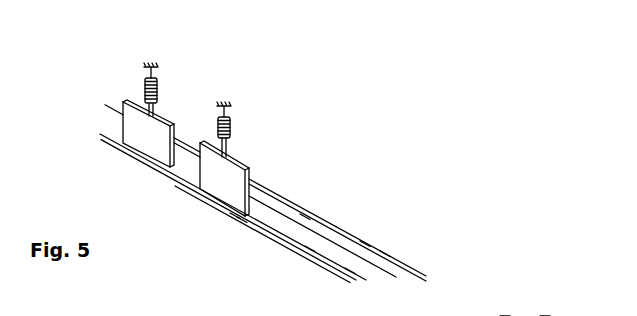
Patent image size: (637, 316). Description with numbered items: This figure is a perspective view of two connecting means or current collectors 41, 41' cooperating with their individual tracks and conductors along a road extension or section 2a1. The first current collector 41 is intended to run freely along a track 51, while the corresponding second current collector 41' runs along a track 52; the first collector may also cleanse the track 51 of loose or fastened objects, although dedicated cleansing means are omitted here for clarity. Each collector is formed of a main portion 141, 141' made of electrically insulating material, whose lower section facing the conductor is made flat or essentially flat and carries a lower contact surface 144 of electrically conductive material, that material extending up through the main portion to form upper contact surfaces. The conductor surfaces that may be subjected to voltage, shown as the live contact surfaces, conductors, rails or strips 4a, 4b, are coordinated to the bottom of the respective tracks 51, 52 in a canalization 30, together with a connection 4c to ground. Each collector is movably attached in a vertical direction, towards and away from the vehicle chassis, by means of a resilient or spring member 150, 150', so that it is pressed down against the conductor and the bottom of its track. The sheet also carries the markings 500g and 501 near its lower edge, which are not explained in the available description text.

The canalization 30 is at (266, 249).
The current collector 41 is at (253, 156).
The current collector 41' is at (124, 113).
The main portion 141 is at (276, 98).
The main portion 141' is at (101, 81).
The spring member 150 is at (234, 76).
The spring member 150' is at (170, 55).
The contact surface 4a is at (302, 220).
The contact surface 4b is at (347, 270).
The connection to ground 4c is at (267, 185).
The track 51 is at (310, 250).
The track 52 is at (365, 240).
The lower contact surface 144 is at (237, 217).
The road extension or section 2a1 is at (209, 218).
The weight 500g is at (545, 315).
The weight hook 501 is at (489, 312).